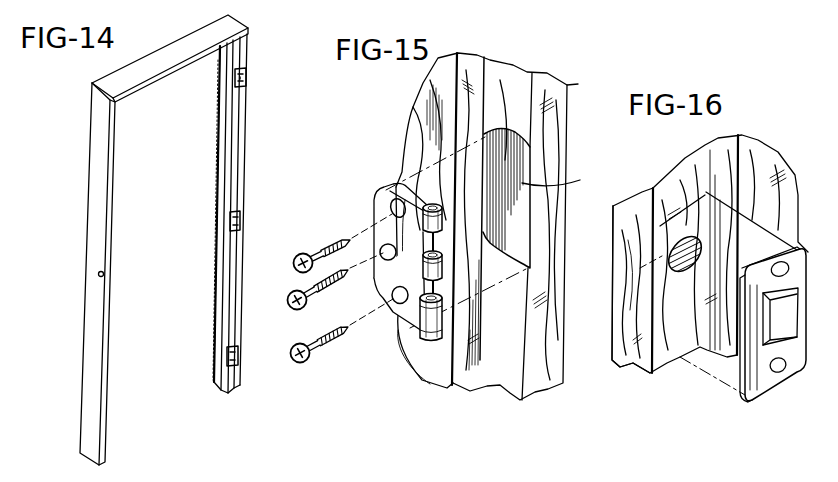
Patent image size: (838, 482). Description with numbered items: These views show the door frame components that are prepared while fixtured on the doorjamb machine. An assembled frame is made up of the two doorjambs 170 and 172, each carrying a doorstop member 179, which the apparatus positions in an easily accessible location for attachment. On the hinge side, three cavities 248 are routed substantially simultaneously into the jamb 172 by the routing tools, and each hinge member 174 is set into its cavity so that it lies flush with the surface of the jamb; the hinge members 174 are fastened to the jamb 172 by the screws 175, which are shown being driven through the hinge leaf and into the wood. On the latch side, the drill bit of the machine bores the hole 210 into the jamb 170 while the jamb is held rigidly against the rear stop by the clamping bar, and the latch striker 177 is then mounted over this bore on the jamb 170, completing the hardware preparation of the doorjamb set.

In FIG. 14, the doorjamb 170 is at (93, 192).
In FIG. 16, the doorjamb 170 is at (634, 364).
In FIG. 14, the doorjamb 172 is at (240, 133).
In FIG. 15, the doorjamb 172 is at (540, 380).
In FIG. 14, the hinge member 174 is at (247, 77).
In FIG. 15, the hinge member 174 is at (375, 210).
In FIG. 15, the screws 175 is at (292, 342).
In FIG. 16, the latch striker 177 is at (765, 390).
In FIG. 14, the doorstop member 179 is at (216, 318).
In FIG. 15, the doorstop member 179 is at (418, 360).
In FIG. 16, the doorstop member 179 is at (770, 157).
In FIG. 14, the hole 210 is at (98, 275).
In FIG. 15, the cavity 248 is at (527, 178).